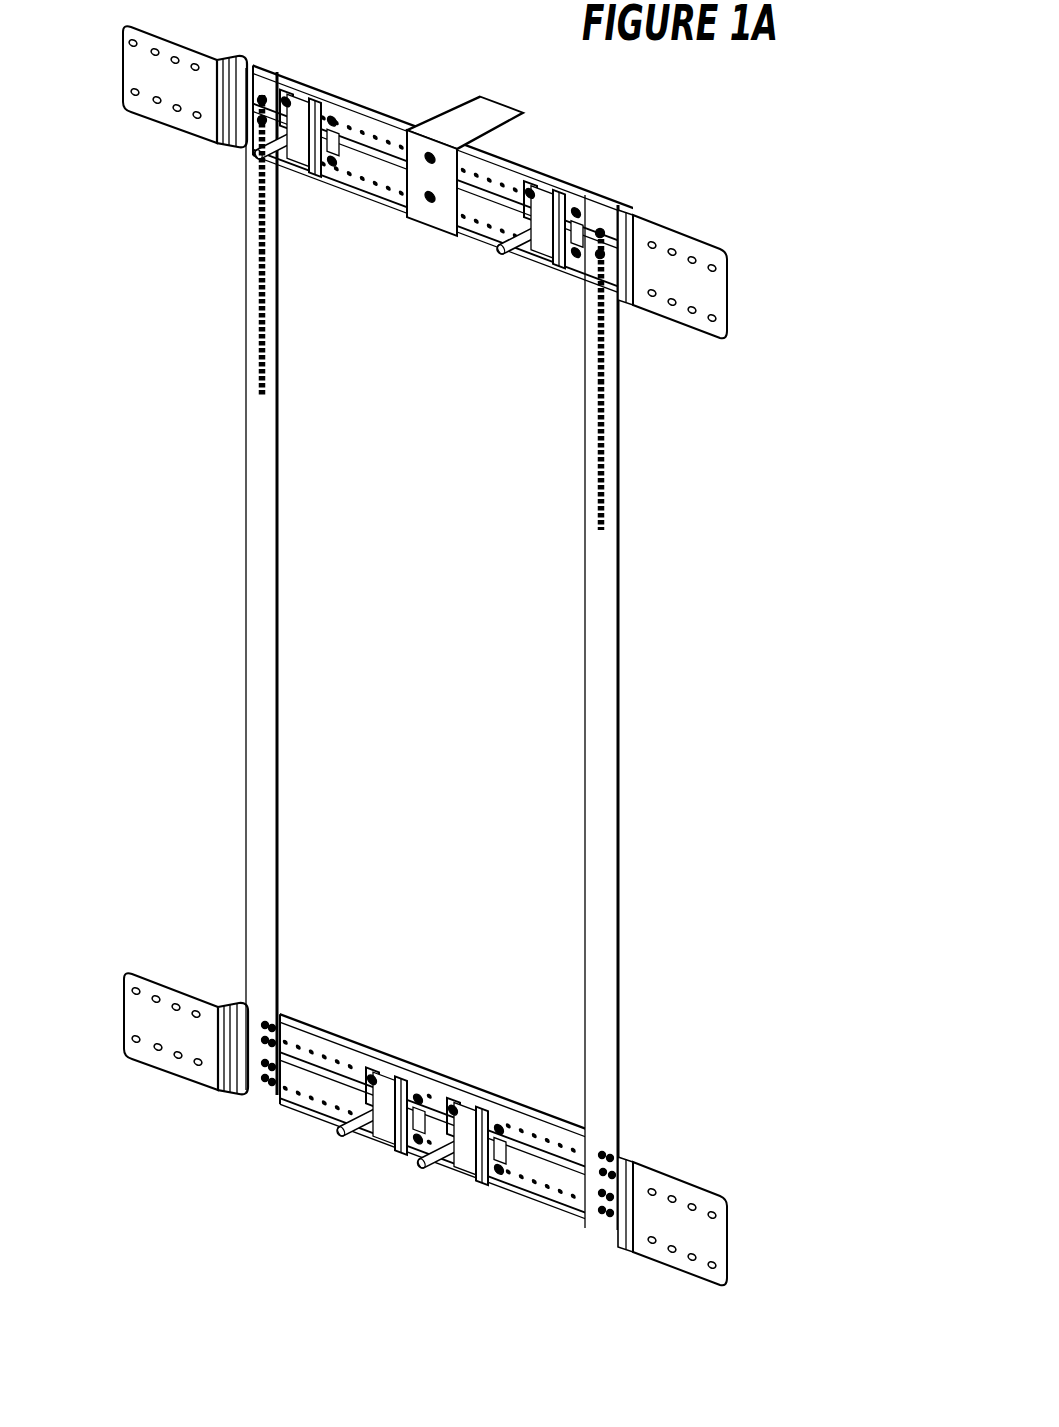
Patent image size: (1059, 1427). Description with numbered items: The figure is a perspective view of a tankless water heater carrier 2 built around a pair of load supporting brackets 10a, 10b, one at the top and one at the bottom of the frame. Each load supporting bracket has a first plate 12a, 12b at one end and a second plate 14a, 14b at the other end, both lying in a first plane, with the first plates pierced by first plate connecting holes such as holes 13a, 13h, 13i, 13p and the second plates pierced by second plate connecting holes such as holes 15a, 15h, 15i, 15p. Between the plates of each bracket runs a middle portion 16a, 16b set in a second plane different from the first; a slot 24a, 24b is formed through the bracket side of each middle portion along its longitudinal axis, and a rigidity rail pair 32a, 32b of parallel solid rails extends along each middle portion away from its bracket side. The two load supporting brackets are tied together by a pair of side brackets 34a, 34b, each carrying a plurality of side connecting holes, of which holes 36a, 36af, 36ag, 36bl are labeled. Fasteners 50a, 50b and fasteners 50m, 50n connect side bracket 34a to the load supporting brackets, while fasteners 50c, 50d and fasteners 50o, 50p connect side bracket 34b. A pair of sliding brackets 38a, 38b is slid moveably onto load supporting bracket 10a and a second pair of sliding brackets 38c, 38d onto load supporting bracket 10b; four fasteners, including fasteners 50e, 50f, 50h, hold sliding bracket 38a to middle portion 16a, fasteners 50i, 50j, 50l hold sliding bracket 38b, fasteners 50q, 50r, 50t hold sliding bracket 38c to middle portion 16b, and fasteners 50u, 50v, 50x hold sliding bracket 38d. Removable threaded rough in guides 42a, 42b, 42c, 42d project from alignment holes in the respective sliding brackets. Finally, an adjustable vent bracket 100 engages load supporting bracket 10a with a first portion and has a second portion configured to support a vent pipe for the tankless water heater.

The tankless water heater carrier 2 is at (183, 1252).
The load supporting bracket 10a is at (443, 173).
The load supporting bracket 10b is at (432, 1111).
The first plate 12a is at (159, 96).
The first plate 12b is at (164, 1043).
The first plate connecting hole 13a is at (131, 43).
The first plate connecting hole 13h is at (172, 138).
The first plate connecting hole 13i is at (134, 991).
The first plate connecting hole 13p is at (173, 1086).
The second plate 14a is at (672, 286).
The second plate 14b is at (672, 1235).
The second plate connecting hole 15a is at (650, 244).
The second plate connecting hole 15h is at (711, 321).
The second plate connecting hole 15i is at (650, 1191).
The second plate connecting hole 15p is at (711, 1268).
The middle portion 16a is at (443, 224).
The middle portion 16b is at (432, 1158).
The slot 24a is at (443, 196).
The slot 24b is at (432, 1130).
The rigidity rail pair 32a is at (443, 182).
The rigidity rail pair 32b is at (432, 1116).
The side bracket 34a is at (260, 562).
The side bracket 34b is at (598, 693).
The side connecting hole 36a is at (262, 93).
The side connecting hole 36af is at (260, 397).
The side connecting hole 36ag is at (601, 229).
The side connecting hole 36bl is at (599, 530).
The sliding bracket 38a is at (303, 100).
The sliding bracket 38b is at (548, 199).
The sliding bracket 38c is at (385, 1138).
The sliding bracket 38d is at (467, 1165).
The removable threaded rough in guide 42a is at (288, 148).
The removable threaded rough in guide 42b is at (515, 247).
The removable threaded rough in guide 42c is at (356, 1132).
The removable threaded rough in guide 42d is at (432, 1160).
The fastener 50a is at (258, 104).
The fastener 50b is at (259, 124).
The fastener 50c is at (603, 230).
The fastener 50d is at (599, 258).
The fastener 50e is at (287, 95).
The fastener 50f is at (335, 115).
The fastener 50h is at (333, 163).
The fastener 50i is at (527, 193).
The fastener 50j is at (577, 216).
The fastener 50l is at (575, 258).
The fastener 50m is at (264, 1043).
The fastener 50n is at (265, 1083).
The fastener 50o is at (602, 1177).
The fastener 50p is at (602, 1215).
The fastener 50q is at (369, 1077).
The fastener 50r is at (418, 1097).
The fastener 50t is at (417, 1141).
The fastener 50u is at (450, 1107).
The fastener 50v is at (498, 1127).
The fastener 50x is at (497, 1170).
The adjustable vent bracket 100 is at (460, 120).